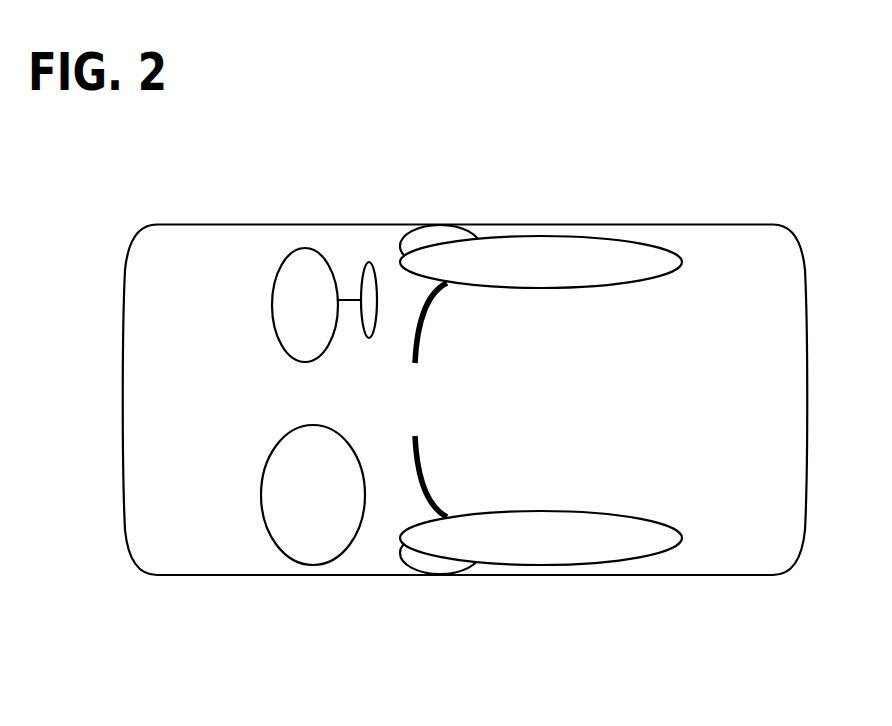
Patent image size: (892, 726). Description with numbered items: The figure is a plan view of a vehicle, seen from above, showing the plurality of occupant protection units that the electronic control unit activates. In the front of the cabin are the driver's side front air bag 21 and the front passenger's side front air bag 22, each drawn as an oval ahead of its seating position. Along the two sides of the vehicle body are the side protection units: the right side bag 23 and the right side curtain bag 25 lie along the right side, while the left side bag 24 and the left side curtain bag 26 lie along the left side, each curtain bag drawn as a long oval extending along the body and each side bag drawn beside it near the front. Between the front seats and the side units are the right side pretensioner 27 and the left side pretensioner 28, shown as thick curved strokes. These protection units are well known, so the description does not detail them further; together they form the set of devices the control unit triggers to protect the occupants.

The driver's side front air bag 21 is at (295, 262).
The front passenger's side front air bag 22 is at (293, 540).
The right side bag 23 is at (438, 234).
The left side bag 24 is at (438, 563).
The right side curtain bag 25 is at (623, 248).
The left side curtain bag 26 is at (635, 552).
The right side pretensioner 27 is at (423, 326).
The left side pretensioner 28 is at (423, 470).